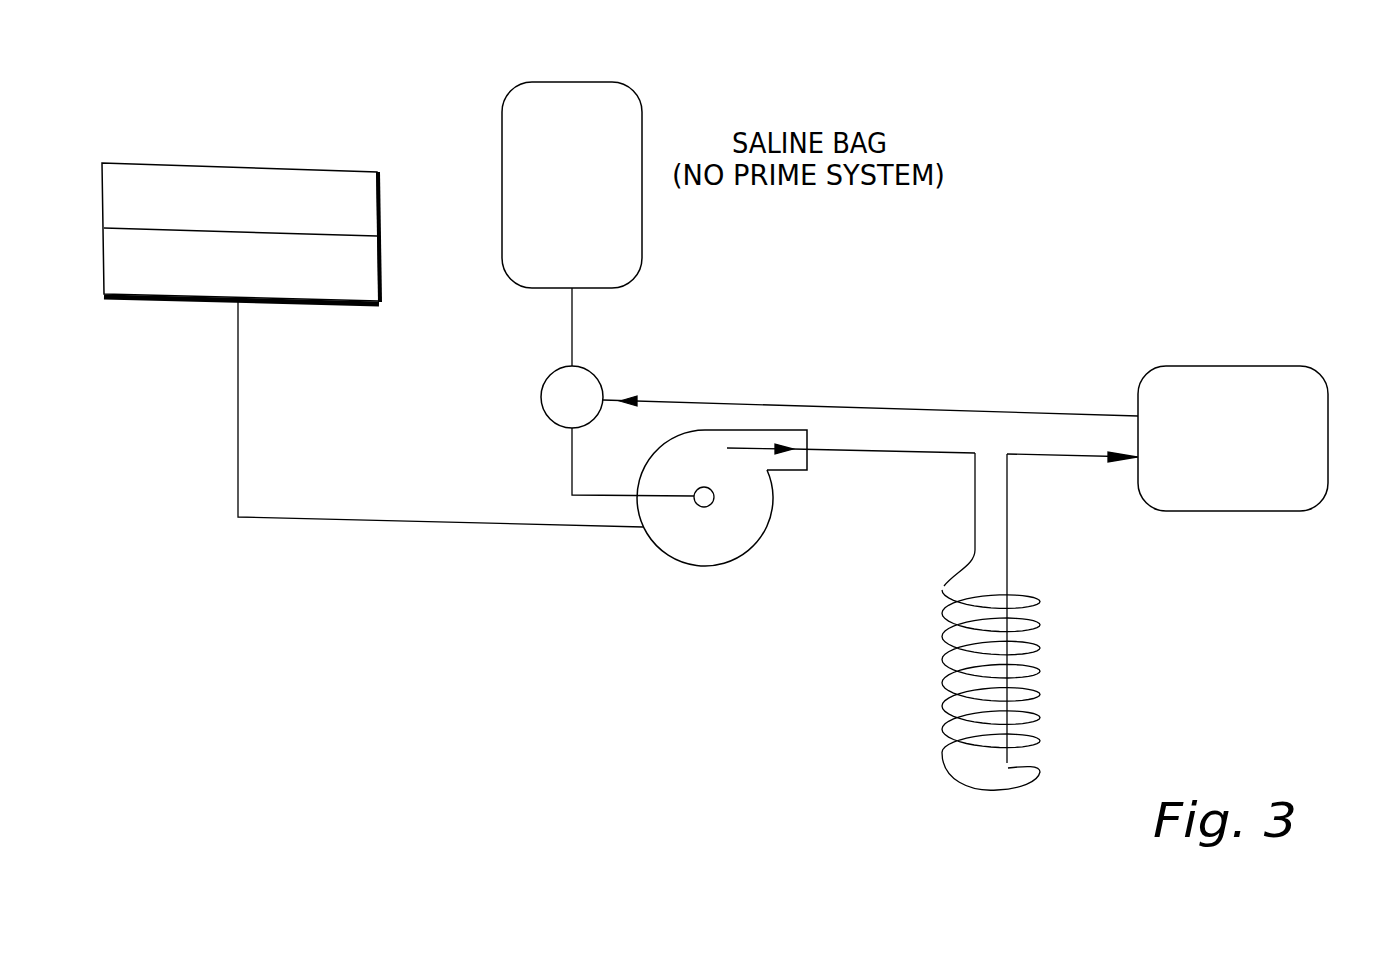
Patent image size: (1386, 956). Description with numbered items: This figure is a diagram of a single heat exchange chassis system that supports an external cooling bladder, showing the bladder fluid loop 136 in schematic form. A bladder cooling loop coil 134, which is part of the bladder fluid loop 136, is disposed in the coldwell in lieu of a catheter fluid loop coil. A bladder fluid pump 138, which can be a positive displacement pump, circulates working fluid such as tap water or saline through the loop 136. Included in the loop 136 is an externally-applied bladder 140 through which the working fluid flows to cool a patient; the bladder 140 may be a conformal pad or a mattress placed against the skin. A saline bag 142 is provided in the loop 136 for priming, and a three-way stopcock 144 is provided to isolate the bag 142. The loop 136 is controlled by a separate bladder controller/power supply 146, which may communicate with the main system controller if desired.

The bladder cooling loop coil 134 is at (1028, 585).
The bladder fluid loop 136 is at (882, 407).
The bladder fluid pump 138 is at (723, 555).
The externally-applied bladder 140 is at (1268, 375).
The saline bag 142 is at (582, 98).
The three-way stopcock 144 is at (565, 388).
The bladder controller/power supply 146 is at (327, 183).